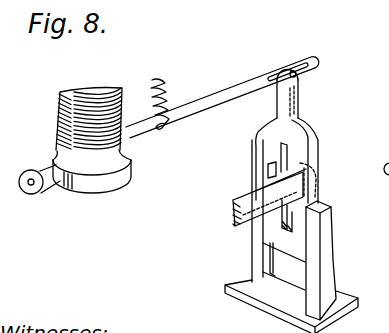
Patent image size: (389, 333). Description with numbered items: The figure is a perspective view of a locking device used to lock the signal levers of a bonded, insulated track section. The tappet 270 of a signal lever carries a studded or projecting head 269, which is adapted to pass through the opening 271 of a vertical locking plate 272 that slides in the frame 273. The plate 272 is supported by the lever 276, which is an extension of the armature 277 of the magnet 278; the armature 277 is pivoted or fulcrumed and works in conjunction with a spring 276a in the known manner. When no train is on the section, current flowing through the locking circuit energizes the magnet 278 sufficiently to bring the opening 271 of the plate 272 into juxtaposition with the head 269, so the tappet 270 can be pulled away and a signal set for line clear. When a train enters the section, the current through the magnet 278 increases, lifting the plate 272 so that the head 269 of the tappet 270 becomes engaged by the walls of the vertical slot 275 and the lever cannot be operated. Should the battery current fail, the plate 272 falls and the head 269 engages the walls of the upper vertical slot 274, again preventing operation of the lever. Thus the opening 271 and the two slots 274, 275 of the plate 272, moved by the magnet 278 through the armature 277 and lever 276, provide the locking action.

The magnet 278 is at (84, 92).
The armature 277 is at (86, 173).
The lever 276 is at (188, 122).
The spring 276a is at (168, 96).
The vertical locking plate 272 is at (313, 138).
The upper vertical slot 274 is at (284, 155).
The opening 271 is at (286, 168).
The tappet 270 is at (248, 195).
The studded head 269 is at (300, 163).
The vertical slot 275 is at (291, 224).
The frame 273 is at (253, 240).